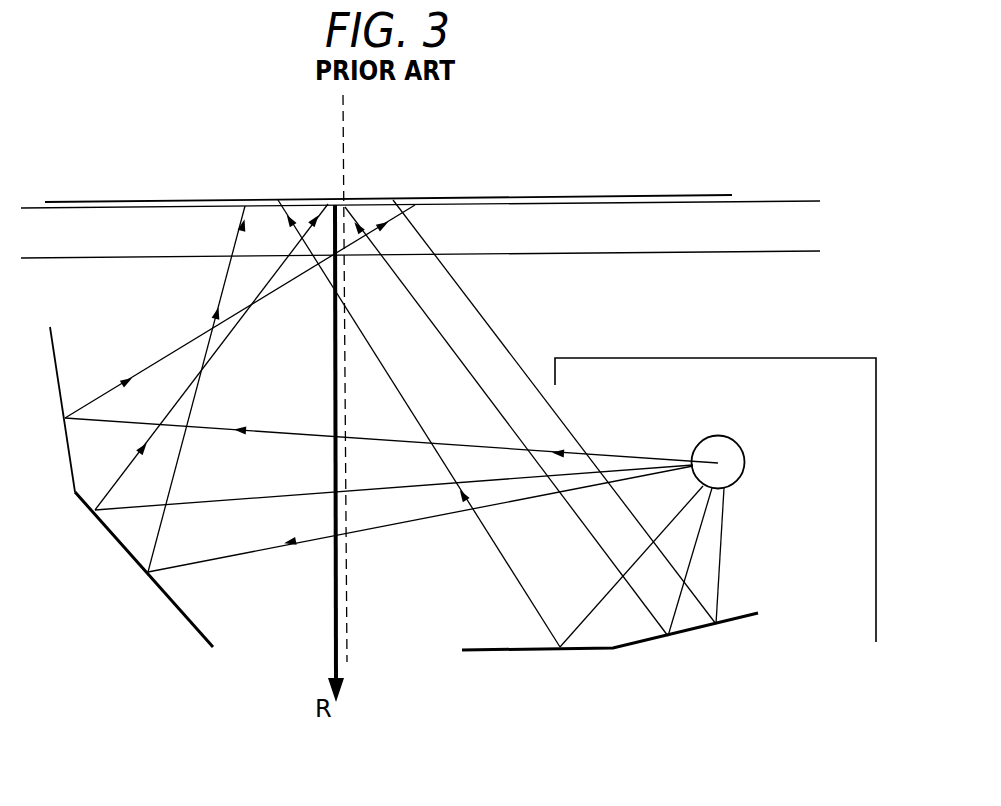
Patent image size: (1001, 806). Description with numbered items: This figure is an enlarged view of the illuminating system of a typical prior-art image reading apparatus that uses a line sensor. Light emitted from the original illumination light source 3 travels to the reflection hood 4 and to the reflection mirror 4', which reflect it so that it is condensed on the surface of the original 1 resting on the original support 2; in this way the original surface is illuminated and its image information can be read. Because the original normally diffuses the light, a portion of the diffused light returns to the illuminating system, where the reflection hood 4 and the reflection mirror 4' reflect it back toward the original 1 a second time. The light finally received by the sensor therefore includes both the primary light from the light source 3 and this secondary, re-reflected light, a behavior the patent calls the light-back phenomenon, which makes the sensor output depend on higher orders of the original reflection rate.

The original 1 is at (517, 198).
The original support 2 is at (66, 228).
The original illumination light source 3 is at (736, 450).
The reflection hood 4 is at (610, 649).
The reflection mirror 4' is at (114, 487).